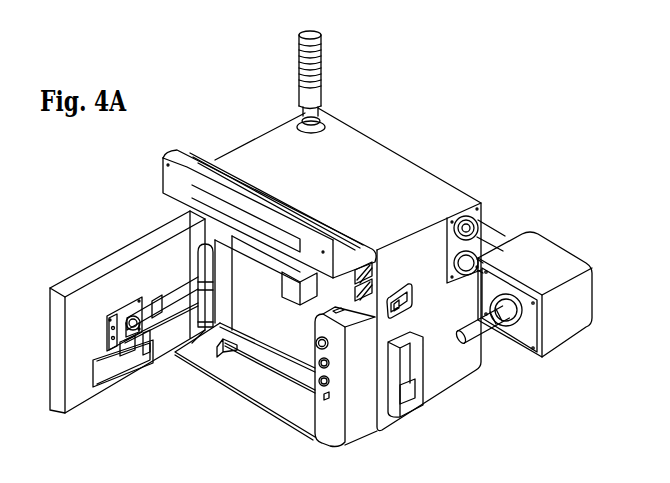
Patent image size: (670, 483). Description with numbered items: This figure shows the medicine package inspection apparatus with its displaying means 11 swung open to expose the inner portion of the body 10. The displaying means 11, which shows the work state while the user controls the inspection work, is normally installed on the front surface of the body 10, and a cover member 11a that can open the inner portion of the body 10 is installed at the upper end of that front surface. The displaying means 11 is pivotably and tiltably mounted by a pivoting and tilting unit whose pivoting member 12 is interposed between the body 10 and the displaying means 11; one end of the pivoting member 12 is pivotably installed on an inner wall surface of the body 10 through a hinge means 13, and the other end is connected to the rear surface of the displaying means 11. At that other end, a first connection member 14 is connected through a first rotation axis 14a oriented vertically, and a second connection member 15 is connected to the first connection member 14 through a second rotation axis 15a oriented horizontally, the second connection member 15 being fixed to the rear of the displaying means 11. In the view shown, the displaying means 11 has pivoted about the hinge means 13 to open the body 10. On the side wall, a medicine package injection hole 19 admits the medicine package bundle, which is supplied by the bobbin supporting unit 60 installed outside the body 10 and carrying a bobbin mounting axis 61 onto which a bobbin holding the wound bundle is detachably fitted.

The body 10 is at (263, 135).
The displaying means 11 is at (68, 285).
The cover member 11a is at (163, 178).
The pivoting member 12 is at (177, 288).
The hinge means 13 is at (200, 262).
The first connection member 14 is at (148, 347).
The first rotation axis 14a is at (133, 313).
The second connection member 15 is at (112, 310).
The second rotation axis 15a is at (112, 337).
The medicine package injection hole 19 is at (395, 288).
The bobbin supporting unit 60 is at (543, 252).
The bobbin mounting axis 61 is at (488, 335).